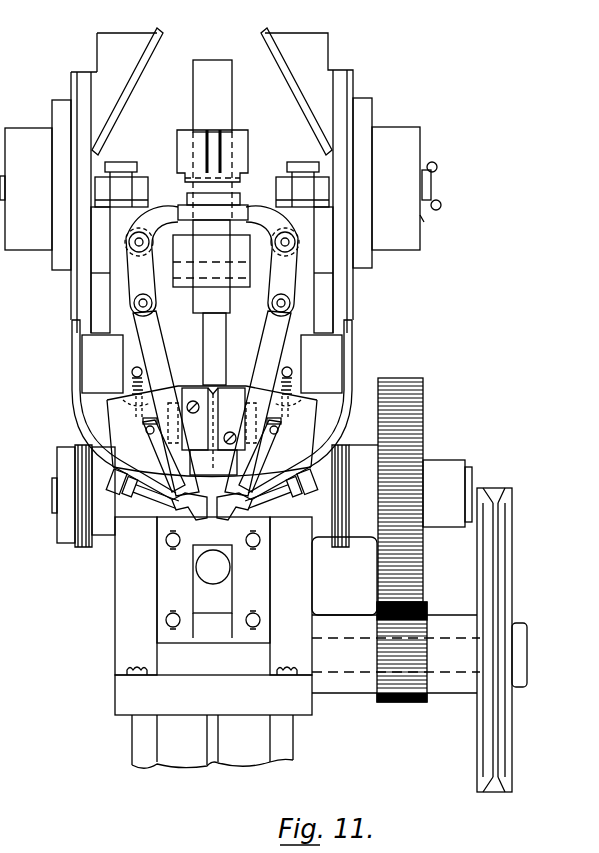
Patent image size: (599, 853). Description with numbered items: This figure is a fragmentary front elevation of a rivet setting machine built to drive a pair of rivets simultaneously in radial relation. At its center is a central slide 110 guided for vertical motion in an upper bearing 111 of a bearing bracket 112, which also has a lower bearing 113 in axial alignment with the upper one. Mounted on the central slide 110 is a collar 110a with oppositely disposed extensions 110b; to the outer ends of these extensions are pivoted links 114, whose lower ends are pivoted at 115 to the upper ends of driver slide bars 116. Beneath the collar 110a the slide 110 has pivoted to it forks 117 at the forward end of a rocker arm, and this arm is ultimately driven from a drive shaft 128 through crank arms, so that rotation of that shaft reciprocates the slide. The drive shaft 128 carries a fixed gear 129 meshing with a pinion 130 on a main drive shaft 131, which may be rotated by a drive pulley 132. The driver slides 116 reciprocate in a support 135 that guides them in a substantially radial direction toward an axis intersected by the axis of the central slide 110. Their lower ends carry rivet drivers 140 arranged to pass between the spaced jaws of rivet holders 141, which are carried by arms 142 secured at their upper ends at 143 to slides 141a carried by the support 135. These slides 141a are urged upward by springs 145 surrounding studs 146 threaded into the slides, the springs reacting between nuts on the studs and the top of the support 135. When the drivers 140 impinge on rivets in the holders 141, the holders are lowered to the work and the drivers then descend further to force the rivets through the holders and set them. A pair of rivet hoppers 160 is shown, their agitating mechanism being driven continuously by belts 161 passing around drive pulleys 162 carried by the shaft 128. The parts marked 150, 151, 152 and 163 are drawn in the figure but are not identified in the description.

The central slide 110 is at (213, 62).
The upper bearing 111 is at (240, 130).
The bearing bracket 112 is at (187, 175).
The collar 110a is at (240, 212).
The extensions 110b is at (147, 222).
The lower bearing 113 is at (233, 385).
The links 114 is at (128, 265).
The pivot 115 is at (134, 303).
The driver slide bars 116 is at (152, 330).
The forks 117 is at (185, 283).
The drive shaft 128 is at (52, 505).
The gear 129 is at (418, 405).
The pinion 130 is at (405, 682).
The main drive shaft 131 is at (445, 647).
The drive pulley 132 is at (505, 485).
The support 135 is at (188, 384).
The rivet drivers 140 is at (190, 475).
The rivet holders 141 is at (172, 510).
The slides 141a is at (125, 403).
The arms 142 is at (158, 455).
The securing point 143 is at (150, 430).
The springs 145 is at (133, 377).
The studs 146 is at (143, 363).
The bore 150 is at (205, 570).
The slot 151 is at (220, 593).
The bolt 152 is at (168, 547).
The hoppers 160 is at (60, 100).
The belts 161 is at (82, 442).
The drive pulleys 162 is at (75, 550).
The curved bracket 163 is at (72, 345).